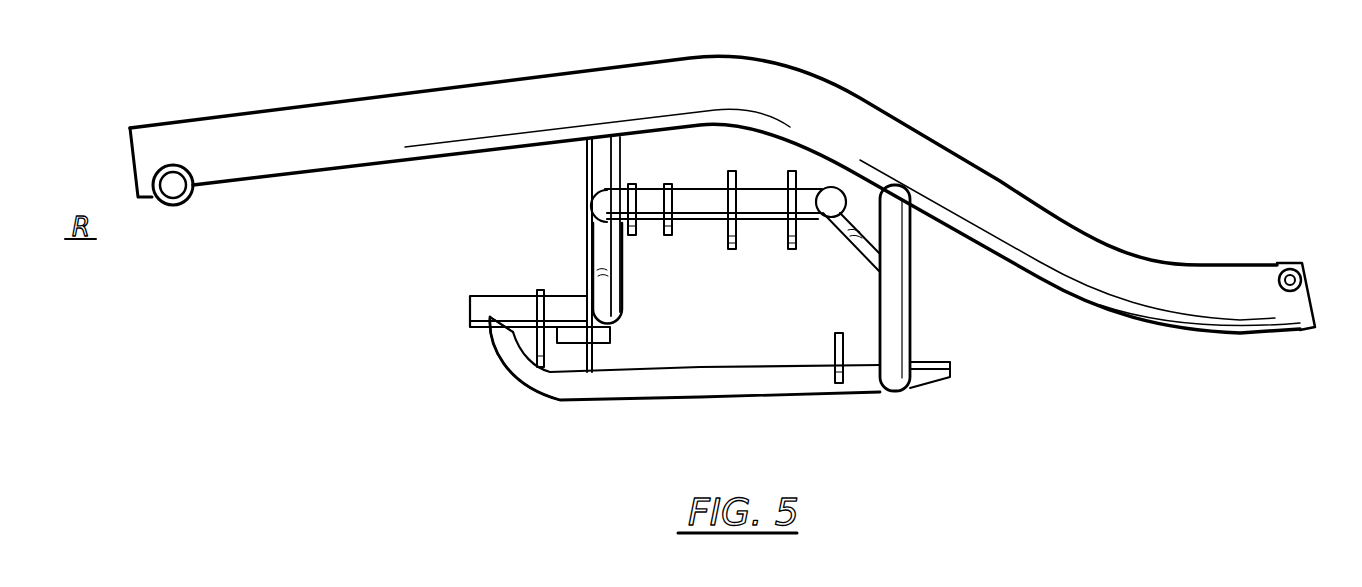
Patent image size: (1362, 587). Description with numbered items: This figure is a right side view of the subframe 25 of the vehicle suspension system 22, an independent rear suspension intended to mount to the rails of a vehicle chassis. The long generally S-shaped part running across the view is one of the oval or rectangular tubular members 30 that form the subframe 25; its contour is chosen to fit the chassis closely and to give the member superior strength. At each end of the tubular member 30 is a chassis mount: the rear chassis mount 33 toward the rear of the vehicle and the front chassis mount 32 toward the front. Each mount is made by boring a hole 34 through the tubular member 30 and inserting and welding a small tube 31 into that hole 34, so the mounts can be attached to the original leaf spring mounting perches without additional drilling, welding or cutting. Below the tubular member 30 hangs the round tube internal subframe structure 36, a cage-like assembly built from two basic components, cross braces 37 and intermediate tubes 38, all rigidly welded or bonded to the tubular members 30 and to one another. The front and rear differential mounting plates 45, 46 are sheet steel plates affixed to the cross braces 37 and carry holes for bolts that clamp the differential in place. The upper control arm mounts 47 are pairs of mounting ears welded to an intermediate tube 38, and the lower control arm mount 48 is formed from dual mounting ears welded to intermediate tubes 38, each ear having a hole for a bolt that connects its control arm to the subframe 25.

The vehicle suspension system 22 is at (913, 277).
The subframe 25 is at (1032, 185).
The tubular member 30 is at (760, 73).
The small tube 31 is at (174, 206).
The front chassis mount 32 is at (1272, 269).
The rear chassis mount 33 is at (160, 162).
The hole 34 is at (188, 169).
The internal subframe structure 36 is at (918, 302).
The cross brace 37 is at (617, 158).
The intermediate tube 38 is at (752, 189).
The front differential mounting plate 45 is at (943, 358).
The rear differential mounting plate 46 is at (610, 338).
The upper control arm mount 47 is at (733, 250).
The lower control arm mount 48 is at (532, 350).